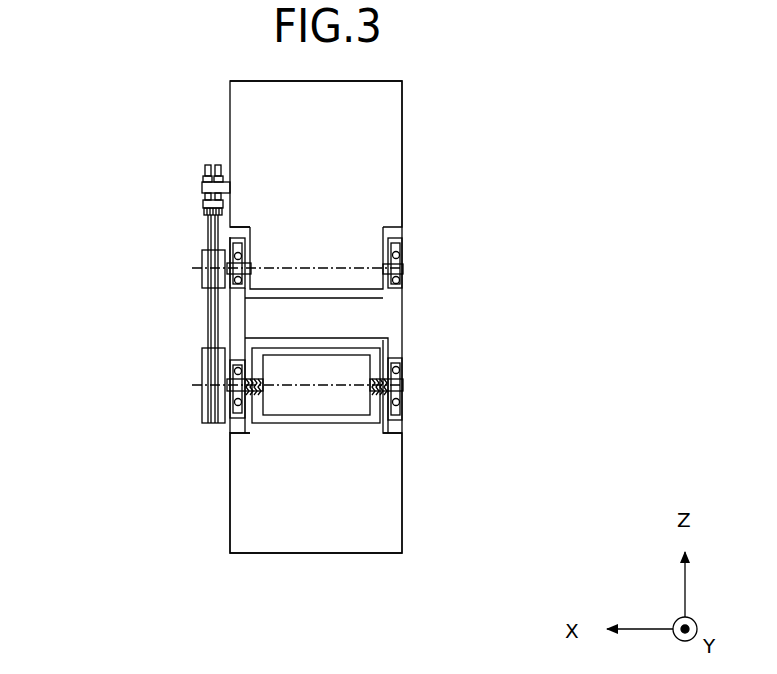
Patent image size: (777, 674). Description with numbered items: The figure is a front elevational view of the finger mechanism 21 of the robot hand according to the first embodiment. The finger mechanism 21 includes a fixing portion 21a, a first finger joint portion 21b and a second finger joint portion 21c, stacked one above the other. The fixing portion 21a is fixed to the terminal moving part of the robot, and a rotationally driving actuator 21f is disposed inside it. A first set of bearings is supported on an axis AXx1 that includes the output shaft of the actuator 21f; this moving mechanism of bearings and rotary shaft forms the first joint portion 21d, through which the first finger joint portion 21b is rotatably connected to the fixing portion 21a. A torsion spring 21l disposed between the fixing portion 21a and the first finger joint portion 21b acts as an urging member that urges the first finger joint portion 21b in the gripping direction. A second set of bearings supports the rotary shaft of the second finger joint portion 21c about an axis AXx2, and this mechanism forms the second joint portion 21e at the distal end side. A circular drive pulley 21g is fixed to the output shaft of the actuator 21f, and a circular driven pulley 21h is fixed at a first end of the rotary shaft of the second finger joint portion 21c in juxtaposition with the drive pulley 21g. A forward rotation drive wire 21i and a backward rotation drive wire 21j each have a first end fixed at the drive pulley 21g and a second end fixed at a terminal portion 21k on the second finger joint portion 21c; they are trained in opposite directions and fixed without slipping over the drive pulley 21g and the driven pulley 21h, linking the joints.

The finger mechanism 21 is at (92, 125).
The fixing portion 21a is at (403, 470).
The first finger joint portion 21b is at (403, 331).
The second finger joint portion 21c is at (403, 130).
The first joint portion 21d is at (412, 408).
The second joint portion 21e is at (414, 245).
The actuator 21f is at (355, 424).
The drive pulley 21g is at (203, 418).
The driven pulley 21h is at (203, 258).
The forward rotation drive wire 21i is at (213, 303).
The backward rotation drive wire 21j is at (210, 338).
The terminal portion 21k is at (200, 190).
The torsion spring 21l is at (300, 424).
The axis AXx1 is at (403, 385).
The axis AXx2 is at (403, 268).